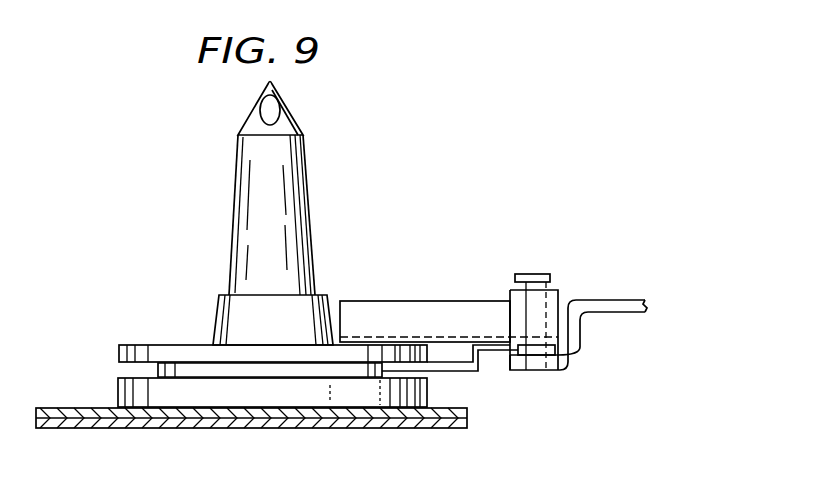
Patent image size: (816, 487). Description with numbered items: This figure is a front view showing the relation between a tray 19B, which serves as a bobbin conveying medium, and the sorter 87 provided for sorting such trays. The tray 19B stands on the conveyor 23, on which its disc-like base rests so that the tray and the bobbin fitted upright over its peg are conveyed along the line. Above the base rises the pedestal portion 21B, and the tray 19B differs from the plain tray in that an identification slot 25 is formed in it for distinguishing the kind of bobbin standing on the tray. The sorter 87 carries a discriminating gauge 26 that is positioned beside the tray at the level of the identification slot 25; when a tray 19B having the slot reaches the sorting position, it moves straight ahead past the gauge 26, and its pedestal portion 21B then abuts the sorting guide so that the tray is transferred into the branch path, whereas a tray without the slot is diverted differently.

The tray 19B is at (198, 314).
The pedestal portion 21B is at (328, 302).
The conveyor 23 is at (147, 418).
The identification slot 25 is at (136, 369).
The discriminating gauge 26 is at (452, 371).
The sorter 87 is at (465, 296).